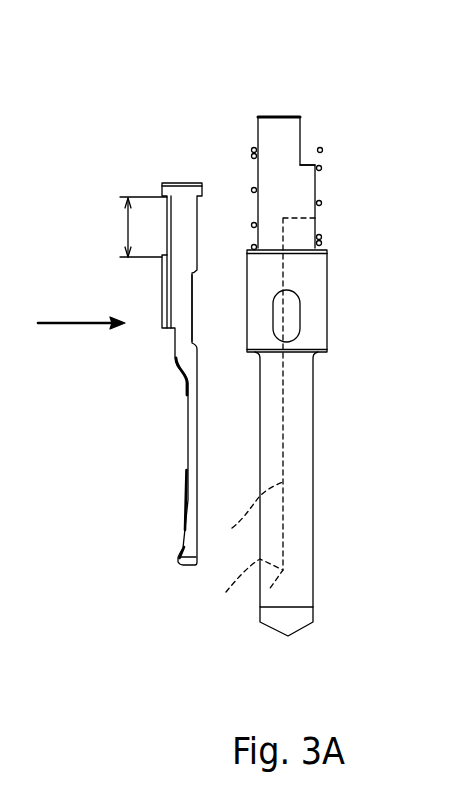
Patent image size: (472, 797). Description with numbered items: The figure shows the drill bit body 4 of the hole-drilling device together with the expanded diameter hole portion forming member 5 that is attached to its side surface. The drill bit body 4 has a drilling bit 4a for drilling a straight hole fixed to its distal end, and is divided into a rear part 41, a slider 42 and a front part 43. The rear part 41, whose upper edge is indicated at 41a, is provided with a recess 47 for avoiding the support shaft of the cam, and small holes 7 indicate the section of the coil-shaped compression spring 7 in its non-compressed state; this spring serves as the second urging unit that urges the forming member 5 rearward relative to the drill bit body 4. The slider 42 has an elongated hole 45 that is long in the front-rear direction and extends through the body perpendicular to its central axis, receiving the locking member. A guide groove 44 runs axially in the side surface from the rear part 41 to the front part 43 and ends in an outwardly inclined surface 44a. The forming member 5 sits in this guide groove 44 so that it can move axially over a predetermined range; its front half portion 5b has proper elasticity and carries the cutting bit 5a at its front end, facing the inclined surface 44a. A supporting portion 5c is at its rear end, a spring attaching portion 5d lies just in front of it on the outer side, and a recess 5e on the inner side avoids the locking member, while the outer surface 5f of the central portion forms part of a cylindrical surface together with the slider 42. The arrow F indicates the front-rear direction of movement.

The drill bit body 4 is at (292, 110).
The drilling bit 4a is at (302, 627).
The rear part 41 is at (256, 135).
The top edge of connecting portion 41a is at (268, 115).
The slider 42 is at (327, 278).
The front part 43 is at (313, 498).
The guide groove 44 is at (245, 512).
The inclined surface 44a is at (226, 592).
The elongated hole 45 is at (291, 322).
The recess 47 is at (304, 137).
The compression spring 7 is at (323, 168).
The expanded diameter hole portion forming member 5 is at (150, 190).
The cutting bit 5a is at (178, 558).
The front half portion 5b is at (188, 420).
The supporting portion 5c is at (180, 182).
The spring attaching portion 5d is at (128, 228).
The recess 5e is at (192, 298).
The outer surface 5f is at (162, 298).
The insertion force direction F is at (68, 326).